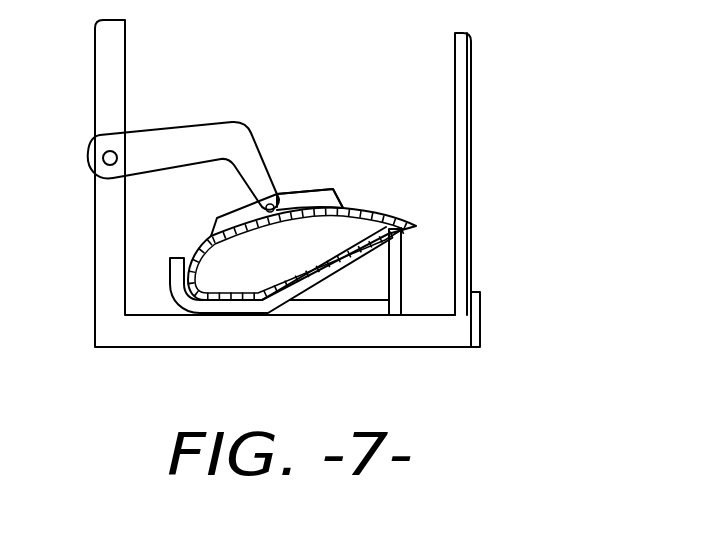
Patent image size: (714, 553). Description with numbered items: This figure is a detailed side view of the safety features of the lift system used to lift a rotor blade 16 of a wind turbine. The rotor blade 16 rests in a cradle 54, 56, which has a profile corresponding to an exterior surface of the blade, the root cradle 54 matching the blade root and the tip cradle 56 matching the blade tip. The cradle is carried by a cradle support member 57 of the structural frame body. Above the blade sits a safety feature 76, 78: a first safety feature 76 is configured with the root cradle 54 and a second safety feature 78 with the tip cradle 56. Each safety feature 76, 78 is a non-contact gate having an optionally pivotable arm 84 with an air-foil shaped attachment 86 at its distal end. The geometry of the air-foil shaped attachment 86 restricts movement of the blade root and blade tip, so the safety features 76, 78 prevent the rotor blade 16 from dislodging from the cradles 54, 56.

The rotor blade 16 is at (392, 218).
The root cradle 54 is at (334, 315).
The tip cradle 56 is at (352, 305).
The cradle support member 57 is at (455, 102).
The first safety feature 76 is at (310, 143).
The second safety feature 78 is at (300, 182).
The pivotable arm 84 is at (152, 128).
The air-foil shaped attachment 86 is at (323, 190).